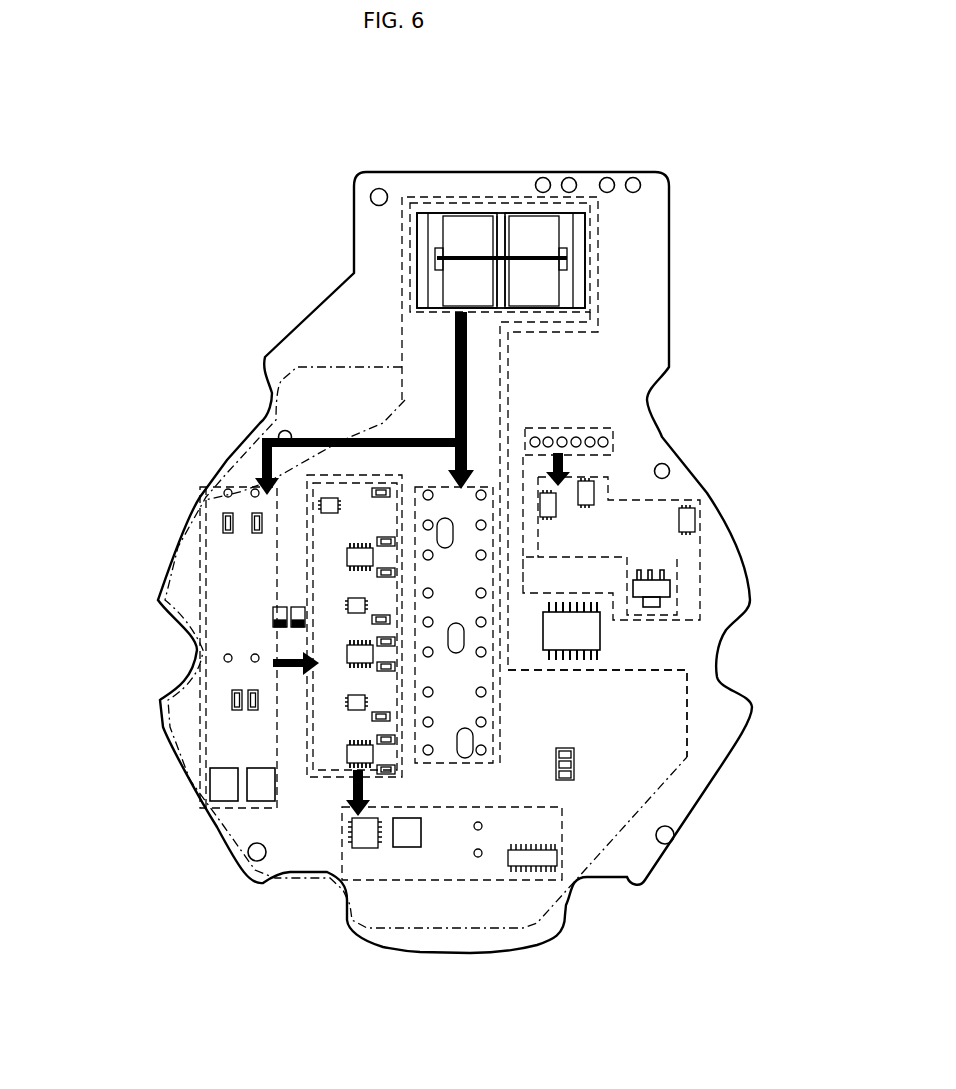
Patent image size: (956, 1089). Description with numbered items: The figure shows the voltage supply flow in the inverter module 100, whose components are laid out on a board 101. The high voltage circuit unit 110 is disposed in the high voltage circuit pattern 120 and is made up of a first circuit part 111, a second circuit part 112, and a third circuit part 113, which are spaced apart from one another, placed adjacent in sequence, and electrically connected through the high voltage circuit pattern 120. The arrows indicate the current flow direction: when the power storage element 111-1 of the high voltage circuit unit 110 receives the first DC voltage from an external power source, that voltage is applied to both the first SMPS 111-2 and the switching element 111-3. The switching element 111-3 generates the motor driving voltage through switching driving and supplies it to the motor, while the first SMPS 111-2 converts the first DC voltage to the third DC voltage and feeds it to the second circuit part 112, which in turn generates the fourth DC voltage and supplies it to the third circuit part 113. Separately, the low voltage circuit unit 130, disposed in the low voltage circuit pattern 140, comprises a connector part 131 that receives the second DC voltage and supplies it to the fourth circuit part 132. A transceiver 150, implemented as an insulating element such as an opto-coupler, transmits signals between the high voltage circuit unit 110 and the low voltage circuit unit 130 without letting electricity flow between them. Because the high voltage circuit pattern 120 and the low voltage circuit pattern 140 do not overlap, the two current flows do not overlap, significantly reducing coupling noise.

The inverter module 100 is at (141, 99).
The board 101 is at (669, 232).
The high voltage circuit unit 110 is at (88, 540).
The first circuit part 111 is at (197, 654).
The power storage element 111-1 is at (593, 263).
The first SMPS 111-2 is at (207, 777).
The switching element 111-3 is at (640, 743).
The second circuit part 112 is at (307, 567).
The third circuit part 113 is at (340, 826).
The high voltage circuit pattern 120 is at (398, 213).
The low voltage circuit unit 130 is at (752, 394).
The connector part 131 is at (615, 452).
The fourth circuit part 132 is at (650, 497).
The low voltage circuit pattern 140 is at (700, 583).
The transceiver 150 is at (600, 633).